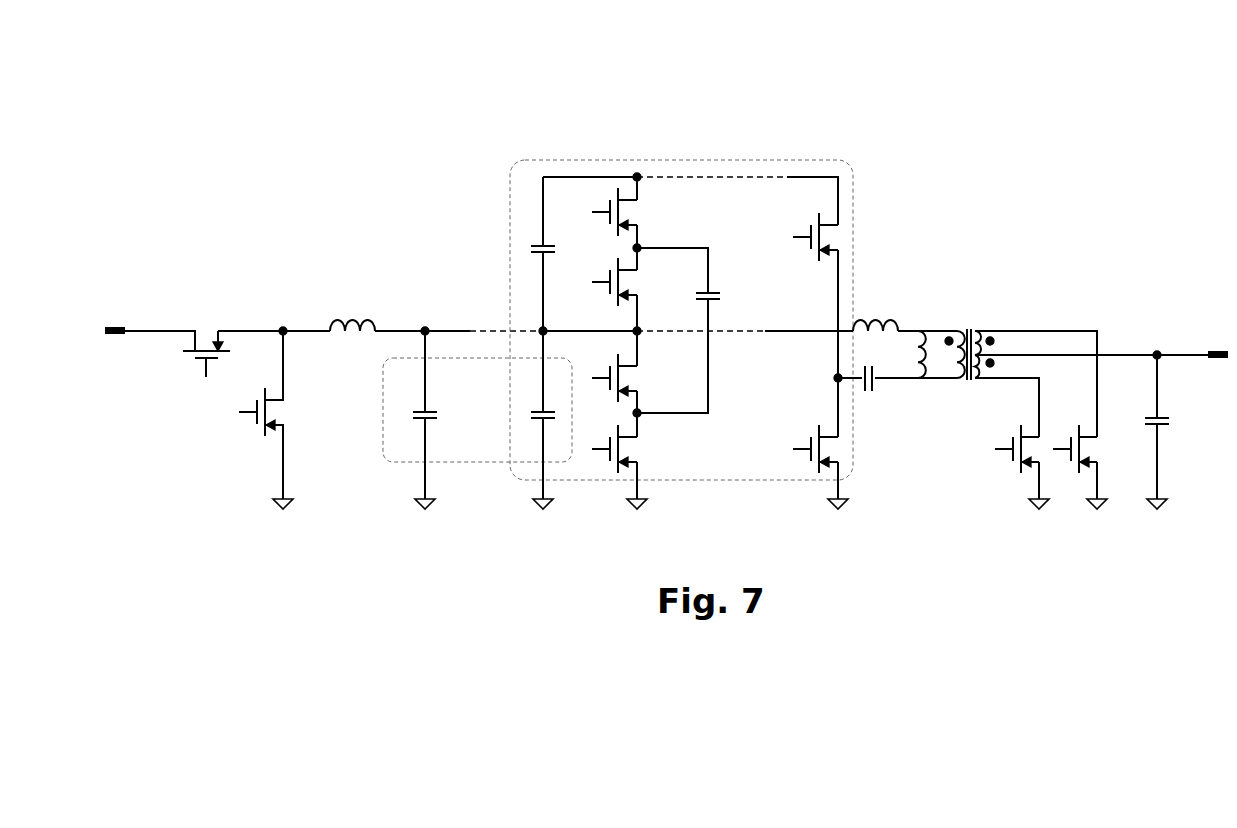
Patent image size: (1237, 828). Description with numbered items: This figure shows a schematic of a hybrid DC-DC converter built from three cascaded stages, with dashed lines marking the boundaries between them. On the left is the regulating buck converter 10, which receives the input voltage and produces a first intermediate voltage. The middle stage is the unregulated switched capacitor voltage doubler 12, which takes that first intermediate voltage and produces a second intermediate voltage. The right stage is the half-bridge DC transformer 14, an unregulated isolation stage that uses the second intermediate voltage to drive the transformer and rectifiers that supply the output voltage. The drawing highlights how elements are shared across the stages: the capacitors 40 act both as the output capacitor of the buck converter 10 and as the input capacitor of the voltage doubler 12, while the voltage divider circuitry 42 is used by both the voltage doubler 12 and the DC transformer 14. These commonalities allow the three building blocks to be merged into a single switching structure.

The regulating buck converter 10 is at (478, 150).
The unregulated switched capacitor voltage doubler 12 is at (740, 133).
The DC transformer 14 is at (478, 48).
The capacitors 40 is at (477, 462).
The voltage divider circuitry 42 is at (767, 481).